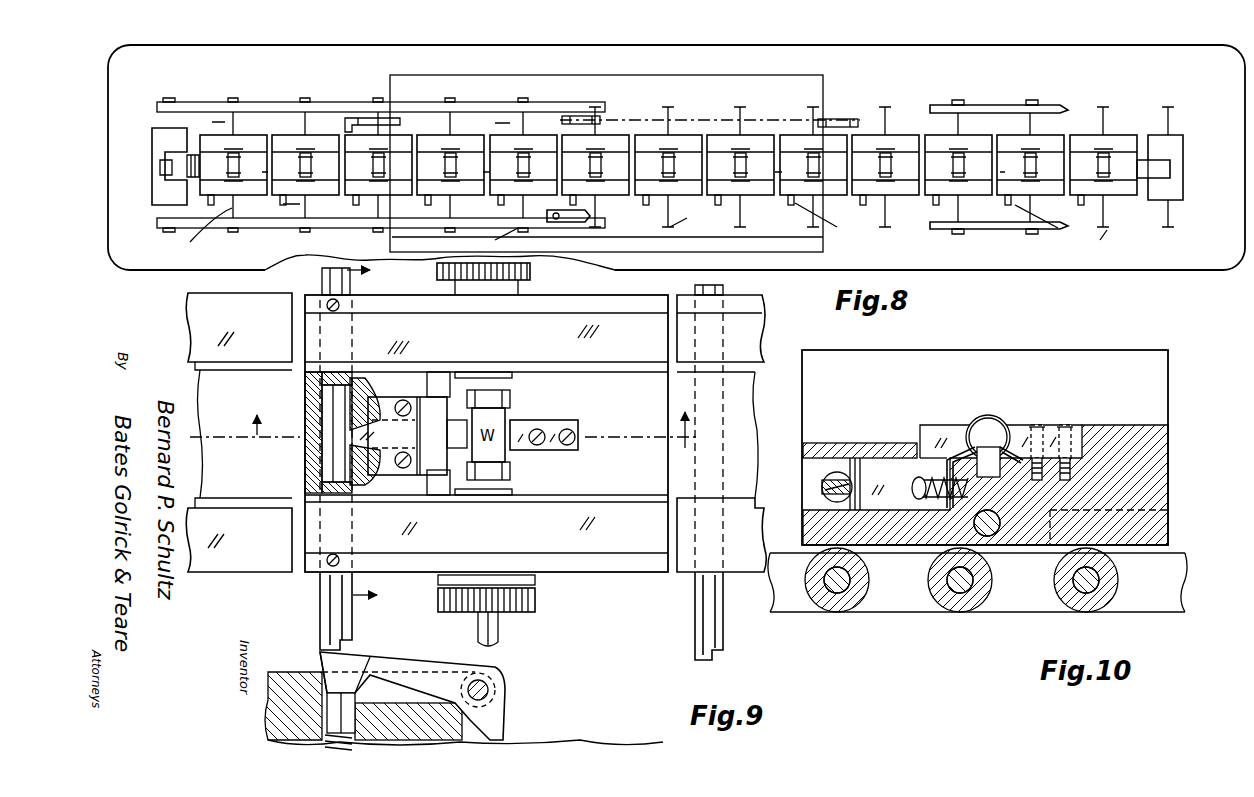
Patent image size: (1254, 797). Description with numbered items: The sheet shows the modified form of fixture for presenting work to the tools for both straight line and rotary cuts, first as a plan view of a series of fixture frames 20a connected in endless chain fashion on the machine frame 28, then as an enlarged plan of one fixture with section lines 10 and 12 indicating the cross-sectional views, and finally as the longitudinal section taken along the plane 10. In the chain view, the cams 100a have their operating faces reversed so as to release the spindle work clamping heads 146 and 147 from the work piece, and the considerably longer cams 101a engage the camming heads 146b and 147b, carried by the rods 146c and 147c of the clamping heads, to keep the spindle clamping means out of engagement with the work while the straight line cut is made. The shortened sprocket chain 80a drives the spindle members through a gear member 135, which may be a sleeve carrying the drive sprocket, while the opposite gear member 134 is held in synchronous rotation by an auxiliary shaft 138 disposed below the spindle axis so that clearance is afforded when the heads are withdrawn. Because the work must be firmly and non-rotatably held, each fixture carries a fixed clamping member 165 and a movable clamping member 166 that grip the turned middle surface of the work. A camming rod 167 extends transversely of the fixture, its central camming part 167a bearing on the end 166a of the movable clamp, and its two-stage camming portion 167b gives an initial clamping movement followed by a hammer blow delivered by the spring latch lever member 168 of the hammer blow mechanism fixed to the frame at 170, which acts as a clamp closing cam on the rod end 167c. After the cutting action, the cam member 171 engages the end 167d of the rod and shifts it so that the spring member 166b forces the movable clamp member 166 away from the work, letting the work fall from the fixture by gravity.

In FIG. 8, the fixture frame 20a is at (437, 140).
In FIG. 9, the fixture frame 20a is at (476, 432).
In FIG. 10, the fixture frame 20a is at (1137, 393).
In FIG. 8, the machine frame 28 is at (975, 265).
In FIG. 8, the sprocket chain 80a is at (765, 125).
In FIG. 8, the cams 101a is at (288, 93).
In FIG. 8, the cams 100a is at (1005, 105).
In FIG. 8, the cam member 171 is at (345, 118).
In FIG. 8, the hammer blow mechanism location 170 is at (565, 220).
In FIG. 8, the spindle clamping head 147 is at (277, 120).
In FIG. 9, the spindle clamping head 147 is at (507, 350).
In FIG. 8, the camming head 147b is at (600, 118).
In FIG. 8, the rod 147c is at (345, 122).
In FIG. 8, the spindle clamping head 146 is at (378, 182).
In FIG. 9, the spindle clamping head 146 is at (492, 495).
In FIG. 8, the camming head 146b is at (790, 231).
In FIG. 8, the rod 146c is at (462, 208).
In FIG. 9, the rod 146c is at (500, 630).
In FIG. 8, the camming rod 167 is at (688, 220).
In FIG. 9, the camming rod 167 is at (343, 580).
In FIG. 10, the camming rod 167 is at (821, 485).
In FIG. 9, the central camming part 167a is at (368, 476).
In FIG. 9, the two-stage camming portion 167b is at (346, 432).
In FIG. 9, the rod end 167c is at (328, 611).
In FIG. 9, the rod end 167d is at (324, 274).
In FIG. 9, the movable clamping member 166 is at (433, 430).
In FIG. 10, the movable clamping member 166 is at (938, 432).
In FIG. 10, the clamping member end 166a is at (870, 467).
In FIG. 10, the spring member 166b is at (937, 497).
In FIG. 9, the fixed clamping member 165 is at (555, 422).
In FIG. 10, the fixed clamping member 165 is at (1050, 430).
In FIG. 9, the spring latch lever member 168 is at (412, 663).
In FIG. 9, the gear member 135 is at (533, 283).
In FIG. 9, the gear member 134 is at (537, 602).
In FIG. 10, the auxiliary shaft 138 is at (991, 535).
In FIG. 9, the section line 10- 10 is at (446, 420).
In FIG. 9, the section line 12- 12 is at (375, 438).